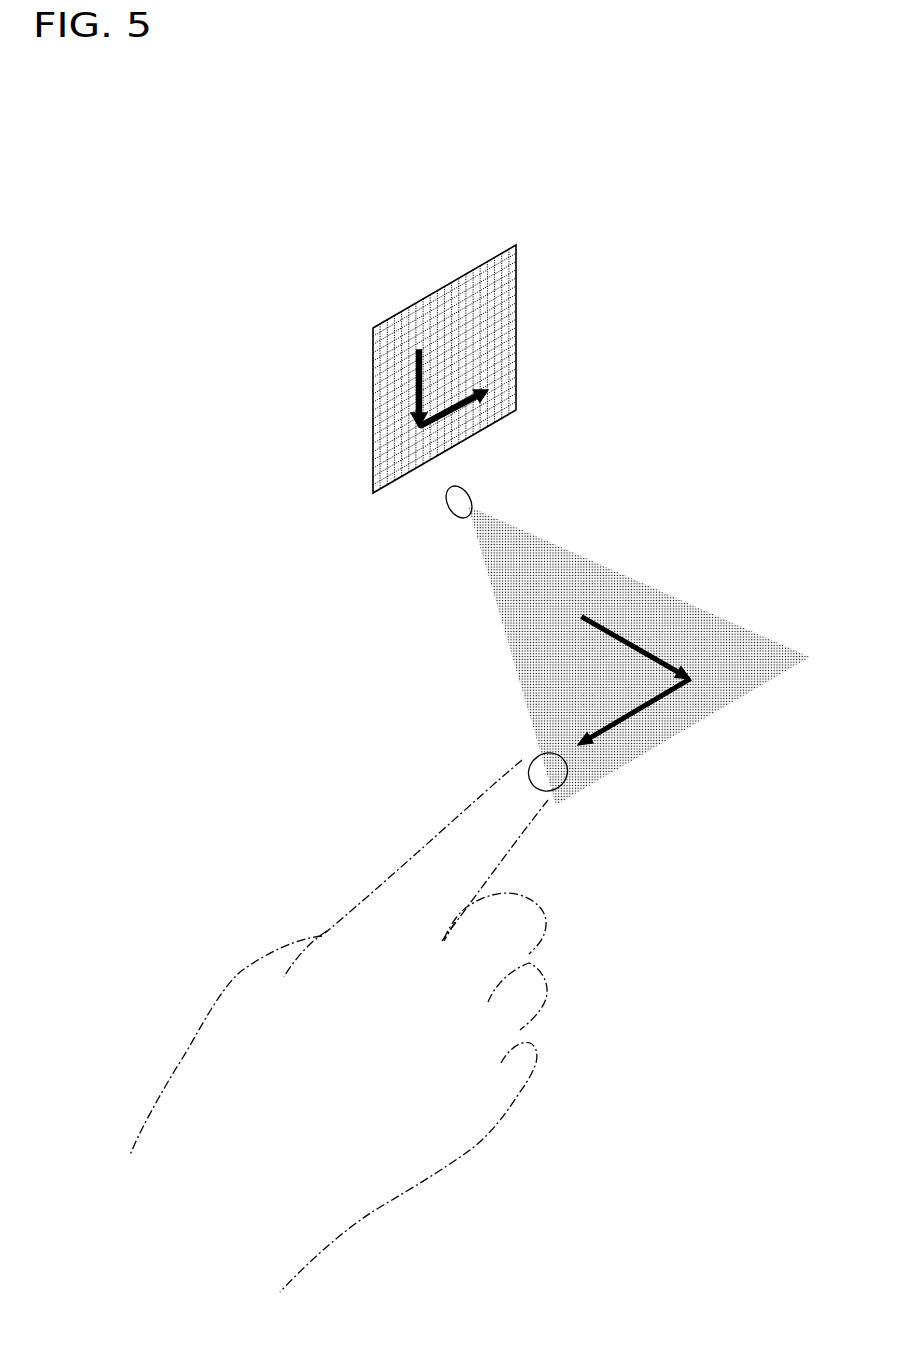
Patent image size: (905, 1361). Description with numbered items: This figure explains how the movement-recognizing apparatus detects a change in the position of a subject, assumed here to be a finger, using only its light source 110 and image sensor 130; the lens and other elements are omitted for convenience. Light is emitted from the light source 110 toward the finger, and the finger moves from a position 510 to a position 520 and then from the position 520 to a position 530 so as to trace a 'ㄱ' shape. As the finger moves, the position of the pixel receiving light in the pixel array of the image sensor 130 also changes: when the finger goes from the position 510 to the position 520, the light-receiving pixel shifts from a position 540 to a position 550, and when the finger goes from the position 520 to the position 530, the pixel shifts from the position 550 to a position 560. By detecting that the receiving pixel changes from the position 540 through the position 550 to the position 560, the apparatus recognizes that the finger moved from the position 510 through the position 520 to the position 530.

The light source 110 is at (472, 490).
The image sensor 130 is at (442, 288).
The position 510 is at (582, 617).
The position 520 is at (693, 672).
The position 530 is at (580, 743).
The position 540 is at (392, 368).
The position 550 is at (413, 426).
The position 560 is at (487, 393).